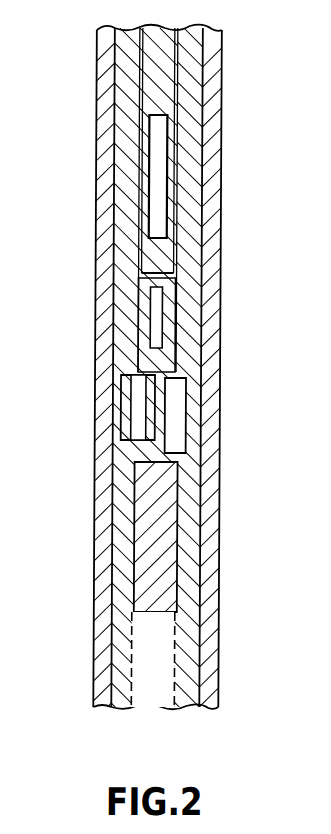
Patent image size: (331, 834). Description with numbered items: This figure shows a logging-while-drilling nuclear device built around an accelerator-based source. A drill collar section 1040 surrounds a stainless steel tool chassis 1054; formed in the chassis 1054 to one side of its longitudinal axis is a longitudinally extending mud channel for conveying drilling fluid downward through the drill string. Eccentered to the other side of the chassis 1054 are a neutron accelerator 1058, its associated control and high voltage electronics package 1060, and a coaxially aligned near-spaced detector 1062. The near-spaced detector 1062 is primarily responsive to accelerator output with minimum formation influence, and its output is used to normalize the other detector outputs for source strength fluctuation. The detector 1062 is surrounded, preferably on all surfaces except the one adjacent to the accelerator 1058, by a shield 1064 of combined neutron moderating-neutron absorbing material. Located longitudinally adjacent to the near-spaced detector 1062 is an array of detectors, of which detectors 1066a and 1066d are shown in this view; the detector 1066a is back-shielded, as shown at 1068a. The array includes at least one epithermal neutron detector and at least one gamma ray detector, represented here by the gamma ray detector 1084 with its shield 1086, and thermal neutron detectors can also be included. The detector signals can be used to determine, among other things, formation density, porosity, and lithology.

The drill collar section 1040 is at (99, 186).
The control and high voltage electronics package 1060 is at (163, 62).
The neutron accelerator 1058 is at (162, 190).
The tool chassis 1054 is at (190, 241).
The near-spaced detector 1062 is at (144, 325).
The shield 1064 is at (172, 337).
The back-shield 1068a is at (128, 397).
The detector 1066a is at (143, 423).
The detector 1066d is at (173, 415).
The shield 1086 is at (148, 573).
The gamma ray detector 1084 is at (128, 630).